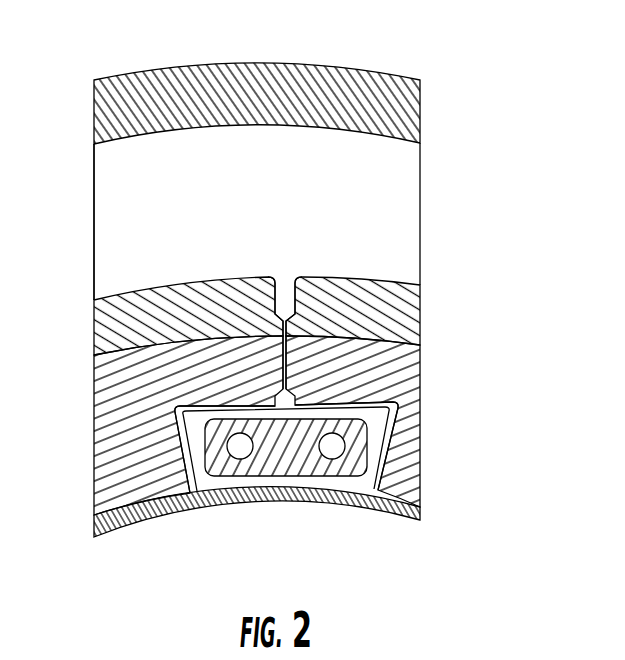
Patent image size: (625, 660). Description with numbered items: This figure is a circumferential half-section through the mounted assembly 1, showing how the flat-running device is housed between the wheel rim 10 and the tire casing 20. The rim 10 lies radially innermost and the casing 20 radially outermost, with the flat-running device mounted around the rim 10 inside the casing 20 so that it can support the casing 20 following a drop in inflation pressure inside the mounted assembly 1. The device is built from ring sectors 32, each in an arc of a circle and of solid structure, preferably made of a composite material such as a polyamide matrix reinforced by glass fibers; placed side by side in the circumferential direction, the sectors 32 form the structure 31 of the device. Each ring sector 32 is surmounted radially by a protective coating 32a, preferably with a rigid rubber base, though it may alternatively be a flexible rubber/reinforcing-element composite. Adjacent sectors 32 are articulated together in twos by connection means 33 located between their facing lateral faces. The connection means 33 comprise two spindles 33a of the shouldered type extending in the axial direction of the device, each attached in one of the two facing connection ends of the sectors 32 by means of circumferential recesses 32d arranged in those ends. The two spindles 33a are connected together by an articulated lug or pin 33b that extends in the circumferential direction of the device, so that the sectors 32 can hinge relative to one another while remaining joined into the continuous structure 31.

The mounted assembly 1 is at (470, 176).
The wheel rim 10 is at (365, 500).
The tire casing 20 is at (377, 62).
The structure 31 is at (133, 243).
The ring sector 32 is at (197, 266).
The protective coating 32a is at (238, 273).
The circumferential recess 32d is at (198, 424).
The connection means 33 is at (209, 486).
The spindle 33a is at (240, 447).
The articulated lug or pin 33b is at (290, 463).